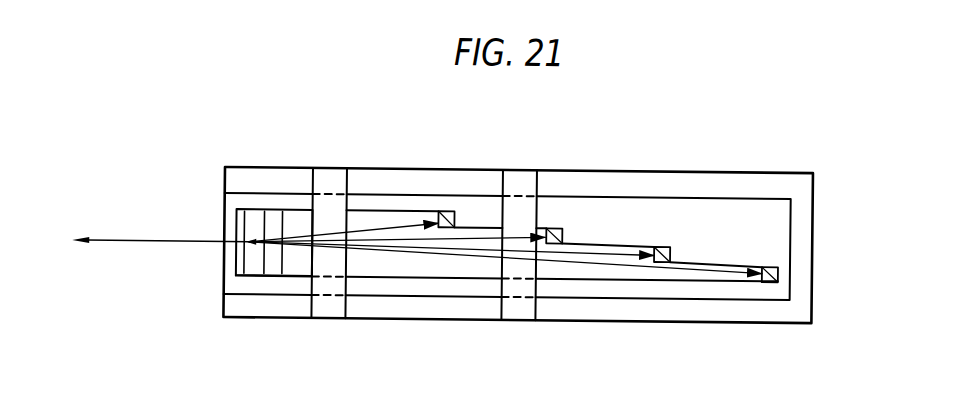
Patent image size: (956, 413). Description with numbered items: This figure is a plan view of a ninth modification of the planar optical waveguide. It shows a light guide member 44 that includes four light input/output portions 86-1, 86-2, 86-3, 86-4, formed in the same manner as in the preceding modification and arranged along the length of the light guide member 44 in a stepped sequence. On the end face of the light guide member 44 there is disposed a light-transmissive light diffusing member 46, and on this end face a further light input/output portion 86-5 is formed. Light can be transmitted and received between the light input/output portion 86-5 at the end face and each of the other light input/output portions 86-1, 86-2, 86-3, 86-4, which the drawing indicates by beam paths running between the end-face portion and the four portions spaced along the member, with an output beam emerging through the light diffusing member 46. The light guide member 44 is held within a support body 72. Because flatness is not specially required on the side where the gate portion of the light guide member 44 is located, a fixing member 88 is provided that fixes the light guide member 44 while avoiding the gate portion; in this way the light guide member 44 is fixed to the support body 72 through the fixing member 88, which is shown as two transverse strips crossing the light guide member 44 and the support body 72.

The support body 72 is at (746, 178).
The light guide member 44 is at (565, 264).
The fixing member 88 is at (332, 304).
The light diffusing member 46 is at (236, 262).
The light input/output portion 86-5 is at (236, 218).
The light input/output portion 86-4 is at (443, 209).
The light input/output portion 86-3 is at (550, 225).
The light input/output portion 86-2 is at (661, 242).
The light input/output portion 86-1 is at (779, 266).